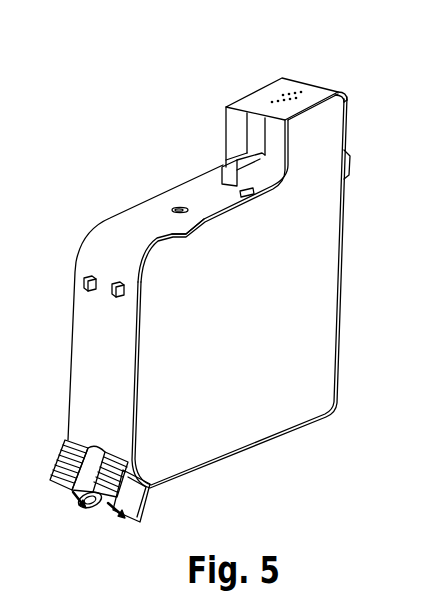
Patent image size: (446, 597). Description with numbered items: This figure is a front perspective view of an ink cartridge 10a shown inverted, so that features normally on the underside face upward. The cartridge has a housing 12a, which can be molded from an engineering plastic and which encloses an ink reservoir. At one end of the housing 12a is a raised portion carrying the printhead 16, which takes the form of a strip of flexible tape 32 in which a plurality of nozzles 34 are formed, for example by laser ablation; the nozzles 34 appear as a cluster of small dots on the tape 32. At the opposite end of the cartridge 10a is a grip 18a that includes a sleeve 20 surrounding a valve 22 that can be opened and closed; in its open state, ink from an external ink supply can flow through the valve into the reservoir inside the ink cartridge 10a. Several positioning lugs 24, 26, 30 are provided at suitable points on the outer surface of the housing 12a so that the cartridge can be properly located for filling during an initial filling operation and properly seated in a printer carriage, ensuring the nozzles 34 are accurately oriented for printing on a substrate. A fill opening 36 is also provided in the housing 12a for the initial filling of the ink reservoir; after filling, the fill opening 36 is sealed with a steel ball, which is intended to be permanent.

The ink cartridge 10a is at (147, 106).
The housing 12a is at (247, 428).
The printhead 16 is at (296, 88).
The grip 18a is at (67, 450).
The sleeve 20 is at (100, 456).
The valve 22 is at (98, 512).
The positioning lug 24 is at (117, 297).
The positioning lug 26 is at (193, 237).
The positioning lug 30 is at (225, 147).
The flexible tape 32 is at (336, 94).
The nozzles 34 is at (283, 94).
The fill opening 36 is at (178, 203).